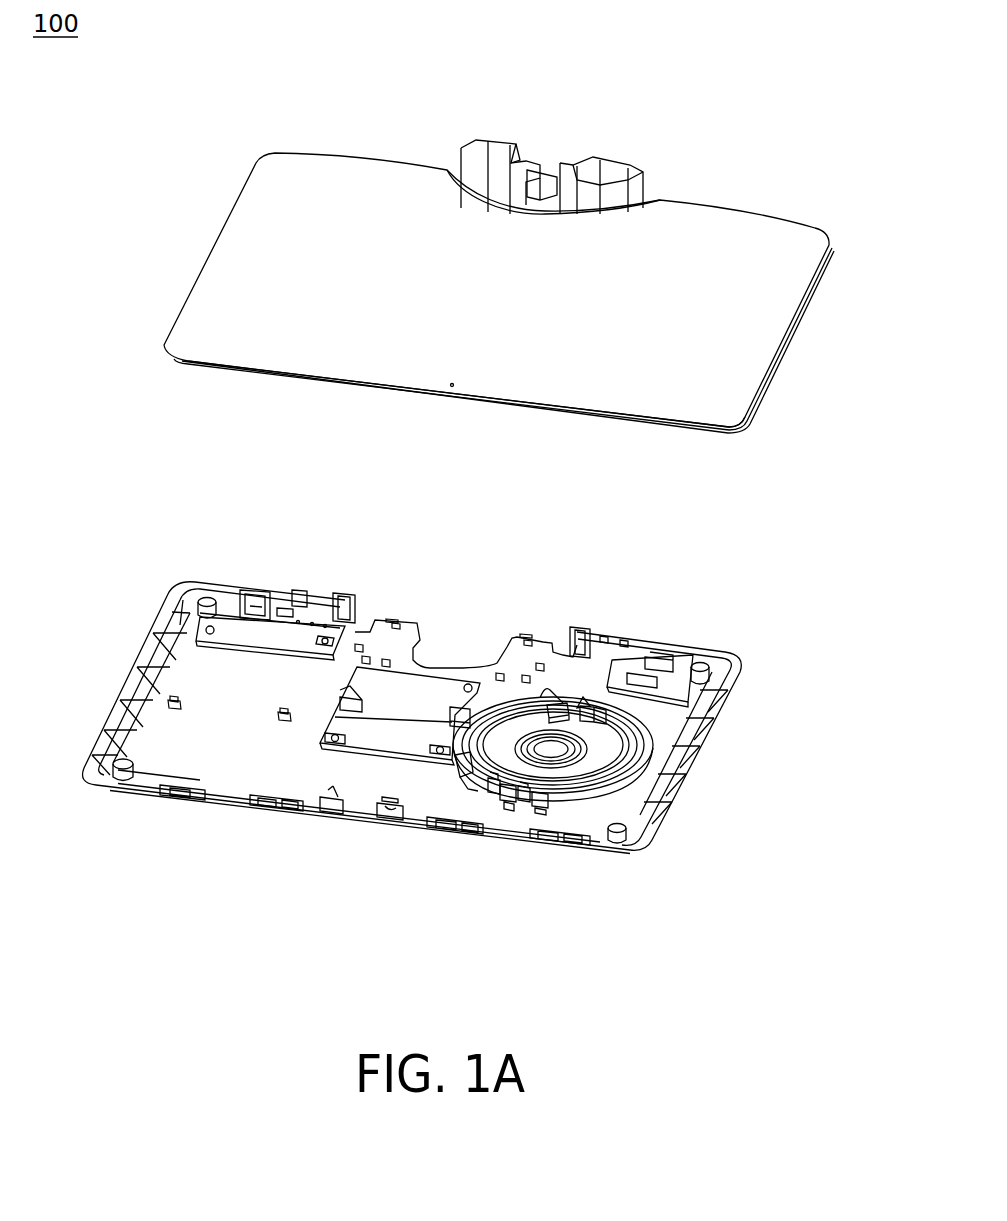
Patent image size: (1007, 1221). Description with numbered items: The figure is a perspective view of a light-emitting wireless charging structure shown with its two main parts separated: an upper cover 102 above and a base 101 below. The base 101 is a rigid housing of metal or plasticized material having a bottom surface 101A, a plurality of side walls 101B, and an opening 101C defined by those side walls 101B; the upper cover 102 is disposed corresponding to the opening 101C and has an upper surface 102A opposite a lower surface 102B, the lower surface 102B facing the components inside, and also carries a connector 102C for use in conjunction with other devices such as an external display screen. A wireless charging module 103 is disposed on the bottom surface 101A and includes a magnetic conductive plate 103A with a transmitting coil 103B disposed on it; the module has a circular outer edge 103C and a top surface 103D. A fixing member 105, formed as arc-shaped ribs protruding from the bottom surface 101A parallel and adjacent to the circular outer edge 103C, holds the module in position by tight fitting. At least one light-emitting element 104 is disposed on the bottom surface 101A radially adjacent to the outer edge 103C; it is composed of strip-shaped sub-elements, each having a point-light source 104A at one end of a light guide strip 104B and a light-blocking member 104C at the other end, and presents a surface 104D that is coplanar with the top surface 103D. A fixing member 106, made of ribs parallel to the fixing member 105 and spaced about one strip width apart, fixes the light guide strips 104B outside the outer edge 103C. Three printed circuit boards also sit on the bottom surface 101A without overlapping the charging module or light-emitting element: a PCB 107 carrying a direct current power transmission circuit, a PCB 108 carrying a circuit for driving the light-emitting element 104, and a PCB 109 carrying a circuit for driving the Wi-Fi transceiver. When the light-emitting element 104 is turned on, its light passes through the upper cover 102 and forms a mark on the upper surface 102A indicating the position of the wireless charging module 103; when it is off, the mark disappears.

The base 101 is at (376, 757).
The bottom surface 101A is at (229, 752).
The side walls 101B is at (113, 733).
The opening 101C is at (152, 793).
The upper cover 102 is at (488, 286).
The upper surface 102A is at (337, 192).
The lower surface 102B is at (632, 428).
The connector 102C is at (605, 163).
The wireless charging module 103 is at (644, 845).
The magnetic conductive plate 103A is at (576, 785).
The transmitting coil 103B is at (538, 792).
The circular outer edge 103C is at (514, 795).
The top surface 103D is at (570, 770).
The light-emitting element 104 is at (374, 847).
The point-light source 104A is at (490, 863).
The light guide strip 104B is at (500, 774).
The light-blocking member 104C is at (452, 714).
The surface 104D is at (475, 752).
The fixing member 105 is at (620, 745).
The fixing member 106 is at (600, 800).
The PCB 107 is at (322, 622).
The PCB 108 is at (437, 690).
The PCB 109 is at (608, 660).